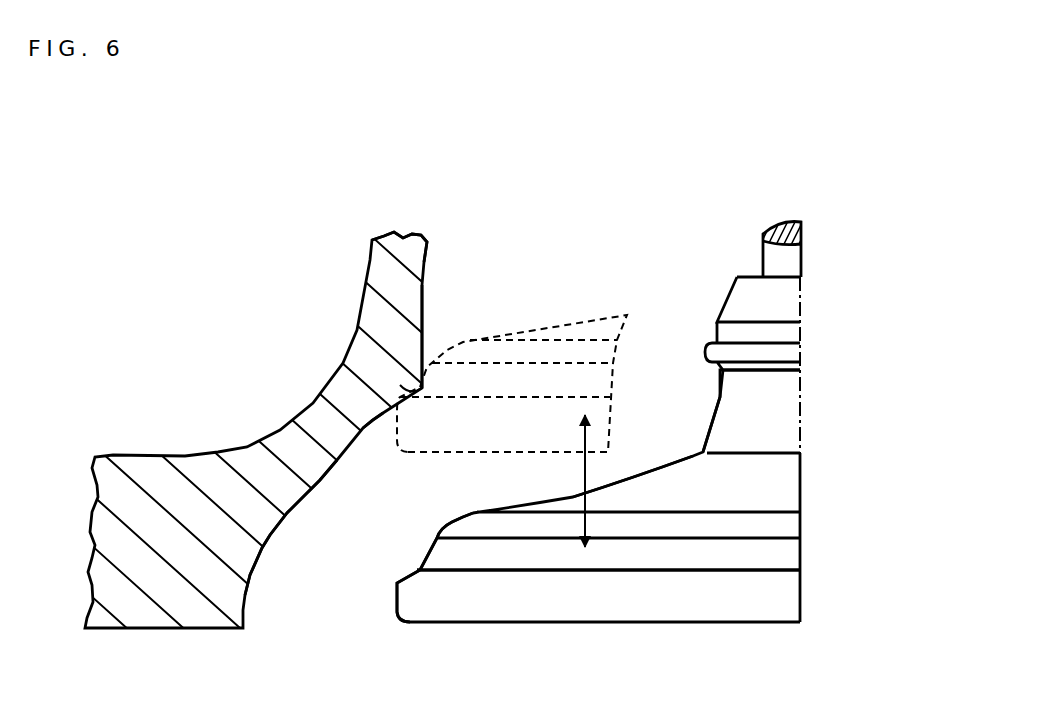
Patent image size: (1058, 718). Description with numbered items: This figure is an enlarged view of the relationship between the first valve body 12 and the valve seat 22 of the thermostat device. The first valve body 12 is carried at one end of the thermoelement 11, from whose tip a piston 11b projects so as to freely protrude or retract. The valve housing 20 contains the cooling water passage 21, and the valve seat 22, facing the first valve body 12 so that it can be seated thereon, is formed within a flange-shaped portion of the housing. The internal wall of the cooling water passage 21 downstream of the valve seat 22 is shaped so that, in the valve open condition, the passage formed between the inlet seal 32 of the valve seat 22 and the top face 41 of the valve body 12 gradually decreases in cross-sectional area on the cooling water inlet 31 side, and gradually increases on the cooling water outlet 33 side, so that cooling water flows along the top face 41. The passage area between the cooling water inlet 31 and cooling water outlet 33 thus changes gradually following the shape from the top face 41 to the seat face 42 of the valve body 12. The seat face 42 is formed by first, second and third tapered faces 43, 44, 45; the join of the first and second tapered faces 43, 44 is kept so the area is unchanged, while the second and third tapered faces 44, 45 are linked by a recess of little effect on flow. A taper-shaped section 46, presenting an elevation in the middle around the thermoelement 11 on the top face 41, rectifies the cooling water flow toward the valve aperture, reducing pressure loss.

The thermoelement 11 is at (817, 334).
The piston 11b is at (792, 257).
The first valve body 12 is at (447, 417).
The valve housing 20 is at (243, 453).
The cooling water passage 21 is at (423, 275).
The valve seat 22 is at (448, 315).
The cooling water inlet 31 is at (380, 436).
The inlet seal 32 is at (423, 385).
The cooling water outlet 33 is at (265, 571).
The top face 41 is at (643, 463).
The seat face 42 is at (482, 573).
The first tapered face 43 is at (472, 528).
The second tapered face 44 is at (437, 562).
The third tapered face 45 is at (427, 603).
The taper-shaped section 46 is at (568, 505).